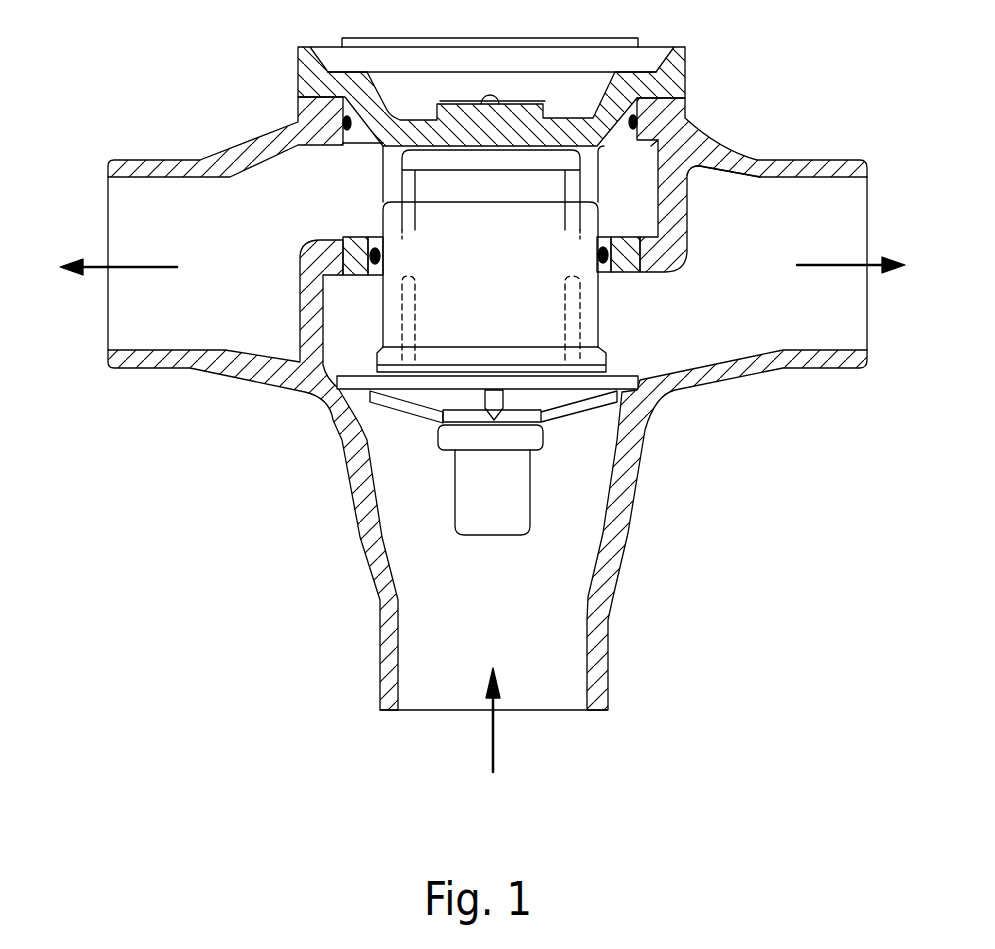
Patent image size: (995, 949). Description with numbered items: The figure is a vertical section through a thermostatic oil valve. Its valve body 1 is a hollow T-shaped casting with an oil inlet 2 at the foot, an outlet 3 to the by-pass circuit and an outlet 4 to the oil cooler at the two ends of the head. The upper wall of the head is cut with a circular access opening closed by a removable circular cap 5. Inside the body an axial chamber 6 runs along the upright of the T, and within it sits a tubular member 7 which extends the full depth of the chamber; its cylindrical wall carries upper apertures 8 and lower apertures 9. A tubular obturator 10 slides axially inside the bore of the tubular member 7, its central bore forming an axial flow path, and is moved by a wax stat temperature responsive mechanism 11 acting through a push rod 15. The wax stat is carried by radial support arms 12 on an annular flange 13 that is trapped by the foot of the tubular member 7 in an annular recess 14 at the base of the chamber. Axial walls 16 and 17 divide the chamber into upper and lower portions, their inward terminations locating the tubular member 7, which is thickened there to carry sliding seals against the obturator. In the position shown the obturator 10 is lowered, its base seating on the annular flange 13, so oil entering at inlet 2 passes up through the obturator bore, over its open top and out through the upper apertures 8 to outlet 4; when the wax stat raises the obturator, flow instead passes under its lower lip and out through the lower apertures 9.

The valve body 1 is at (357, 560).
The oil inlet 2 is at (502, 728).
The outlet 3 is at (854, 252).
The outlet 4 is at (110, 255).
The circular cap 5 is at (640, 95).
The axial chamber 6 is at (352, 190).
The tubular member 7 is at (548, 188).
The apertures 8 is at (385, 178).
The apertures 9 is at (403, 318).
The tubular obturator 10 is at (598, 318).
The wax stat temperature responsive mechanism 11 is at (522, 492).
The radial support arms 12 is at (592, 412).
The annular flange 13 is at (395, 397).
The annular recess 14 is at (634, 424).
The push rod 15 is at (437, 417).
The axial wall 16 is at (323, 306).
The axial wall 17 is at (688, 225).